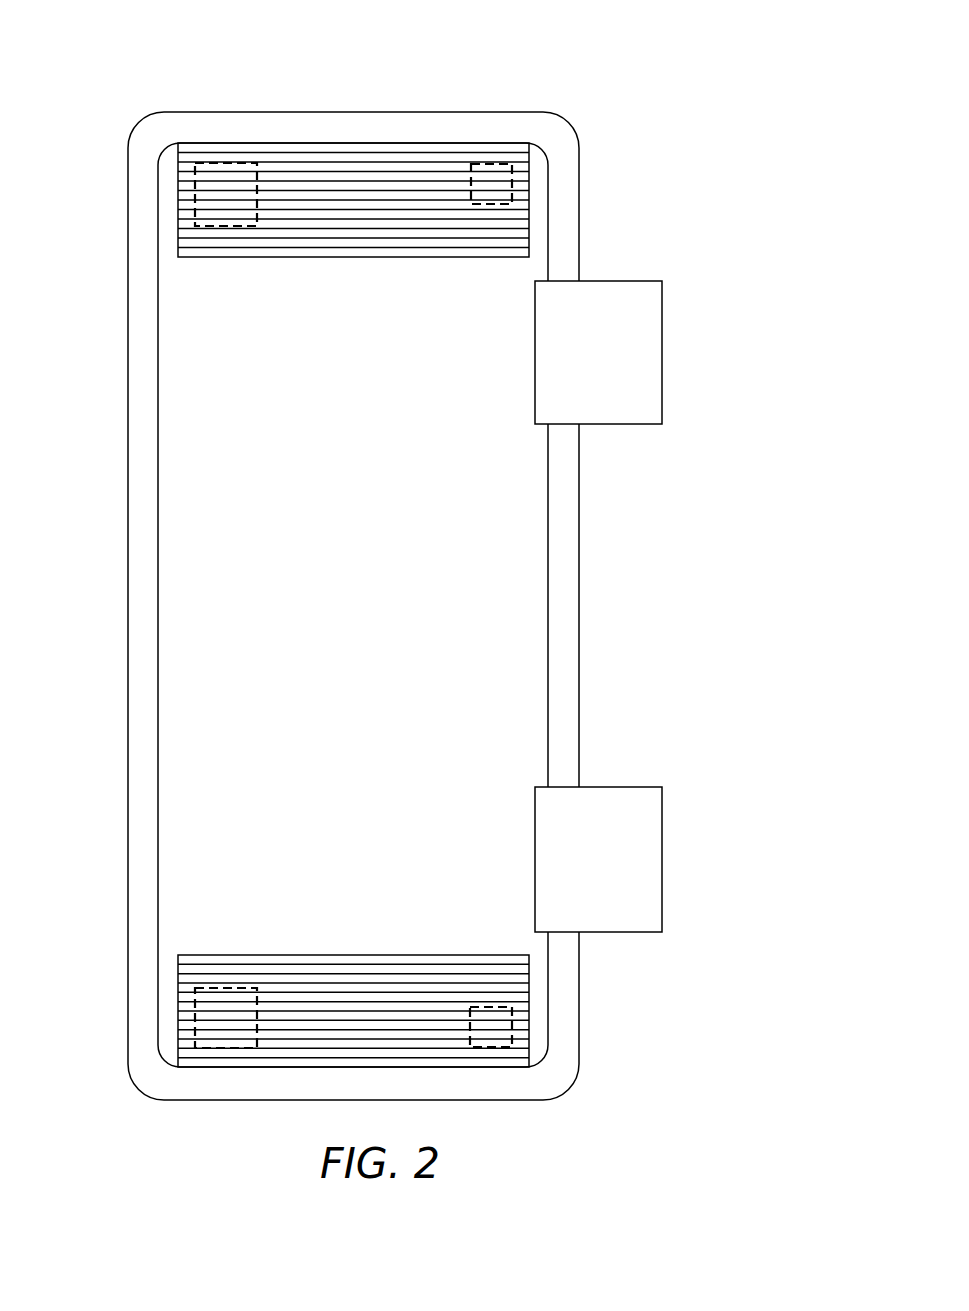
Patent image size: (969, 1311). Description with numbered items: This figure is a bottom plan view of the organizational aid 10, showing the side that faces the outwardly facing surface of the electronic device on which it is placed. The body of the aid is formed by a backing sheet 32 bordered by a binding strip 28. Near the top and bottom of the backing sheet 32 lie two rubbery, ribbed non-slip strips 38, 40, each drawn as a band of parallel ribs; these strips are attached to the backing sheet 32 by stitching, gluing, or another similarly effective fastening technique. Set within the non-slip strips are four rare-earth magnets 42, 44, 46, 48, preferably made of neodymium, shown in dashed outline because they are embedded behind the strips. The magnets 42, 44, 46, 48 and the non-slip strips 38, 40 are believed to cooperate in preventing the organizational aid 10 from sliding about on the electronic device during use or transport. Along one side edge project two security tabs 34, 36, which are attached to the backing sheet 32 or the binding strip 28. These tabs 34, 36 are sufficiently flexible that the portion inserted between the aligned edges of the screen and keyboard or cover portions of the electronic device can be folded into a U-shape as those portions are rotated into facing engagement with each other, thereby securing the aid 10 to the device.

The organizational aid 10 is at (390, 585).
The binding strip 28 is at (137, 508).
The backing sheet 32 is at (190, 632).
The security tab 34 is at (640, 335).
The security tab 36 is at (640, 872).
The non-slip strip 38 is at (293, 179).
The non-slip strip 40 is at (304, 1033).
The rare-earth magnet 42 is at (227, 190).
The rare-earth magnet 44 is at (223, 1017).
The rare-earth magnet 46 is at (495, 182).
The rare-earth magnet 48 is at (490, 1028).